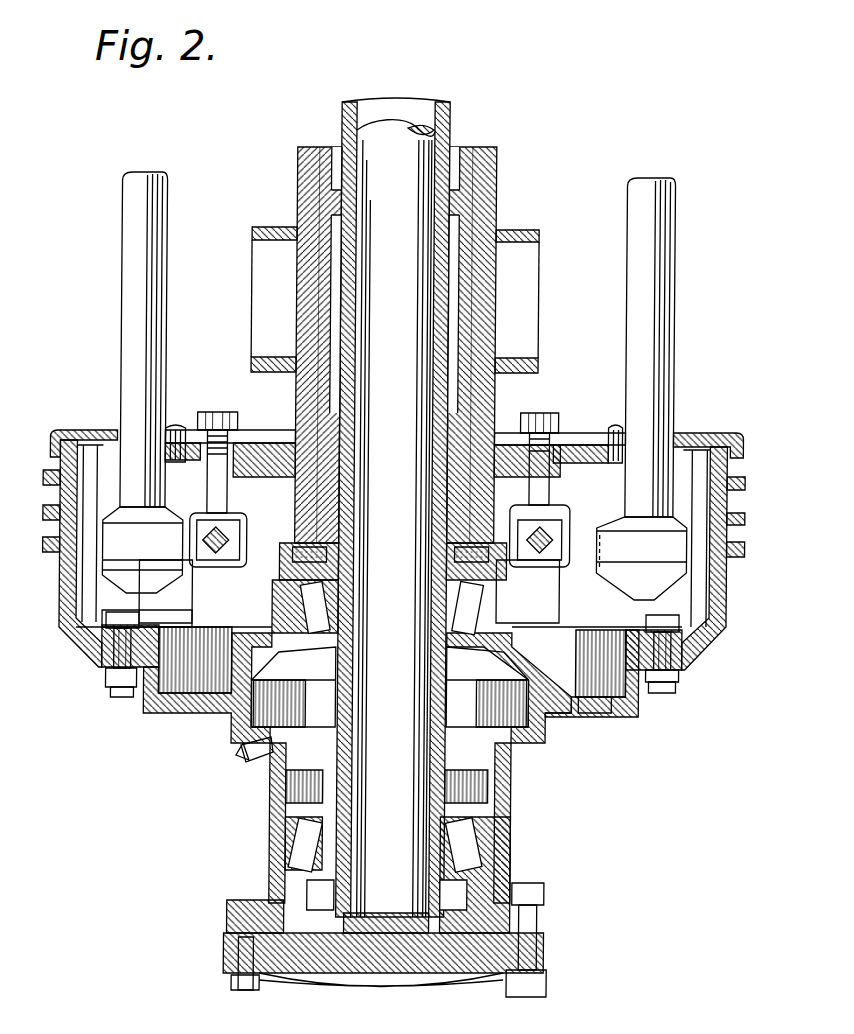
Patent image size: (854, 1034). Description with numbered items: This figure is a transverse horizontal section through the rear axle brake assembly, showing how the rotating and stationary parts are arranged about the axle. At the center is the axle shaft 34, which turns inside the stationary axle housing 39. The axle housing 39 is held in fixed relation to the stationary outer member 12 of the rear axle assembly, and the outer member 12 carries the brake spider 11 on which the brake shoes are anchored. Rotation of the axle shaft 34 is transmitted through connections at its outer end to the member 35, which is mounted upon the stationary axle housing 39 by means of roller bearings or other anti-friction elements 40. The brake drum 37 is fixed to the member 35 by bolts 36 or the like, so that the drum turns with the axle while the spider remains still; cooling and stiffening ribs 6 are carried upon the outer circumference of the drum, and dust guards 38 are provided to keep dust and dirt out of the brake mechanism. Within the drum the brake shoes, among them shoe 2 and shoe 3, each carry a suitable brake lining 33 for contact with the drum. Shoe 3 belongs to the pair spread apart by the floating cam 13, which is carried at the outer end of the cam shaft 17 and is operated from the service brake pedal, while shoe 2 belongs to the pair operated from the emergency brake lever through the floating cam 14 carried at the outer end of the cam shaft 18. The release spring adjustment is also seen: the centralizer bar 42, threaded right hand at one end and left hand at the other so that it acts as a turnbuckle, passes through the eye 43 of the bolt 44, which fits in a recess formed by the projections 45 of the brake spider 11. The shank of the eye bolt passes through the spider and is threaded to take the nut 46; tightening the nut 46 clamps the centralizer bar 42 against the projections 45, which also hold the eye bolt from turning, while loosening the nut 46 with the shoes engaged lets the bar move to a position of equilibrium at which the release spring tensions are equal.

The brake shoe 2 is at (95, 638).
The brake shoe 3 is at (690, 478).
The cooling and stiffening ribs 6 is at (43, 545).
The brake spider 11 is at (270, 460).
The stationary outer member 12 is at (295, 215).
The floating cam 13 is at (641, 558).
The floating cam 14 is at (142, 550).
The cam shaft 17 is at (665, 258).
The cam shaft 18 is at (118, 236).
The brake lining 33 is at (700, 497).
The axle shaft 34 is at (393, 518).
The member 35 is at (272, 835).
The bolts 36 is at (122, 690).
The brake drum 37 is at (62, 607).
The dust guards 38 is at (76, 430).
The axle housing 39 is at (325, 147).
The roller bearings 40 is at (470, 606).
The centralizer bar 42 is at (216, 556).
The eye 43 is at (203, 568).
The bolt 44 is at (242, 445).
The projections 45 is at (232, 492).
The nut 46 is at (217, 430).